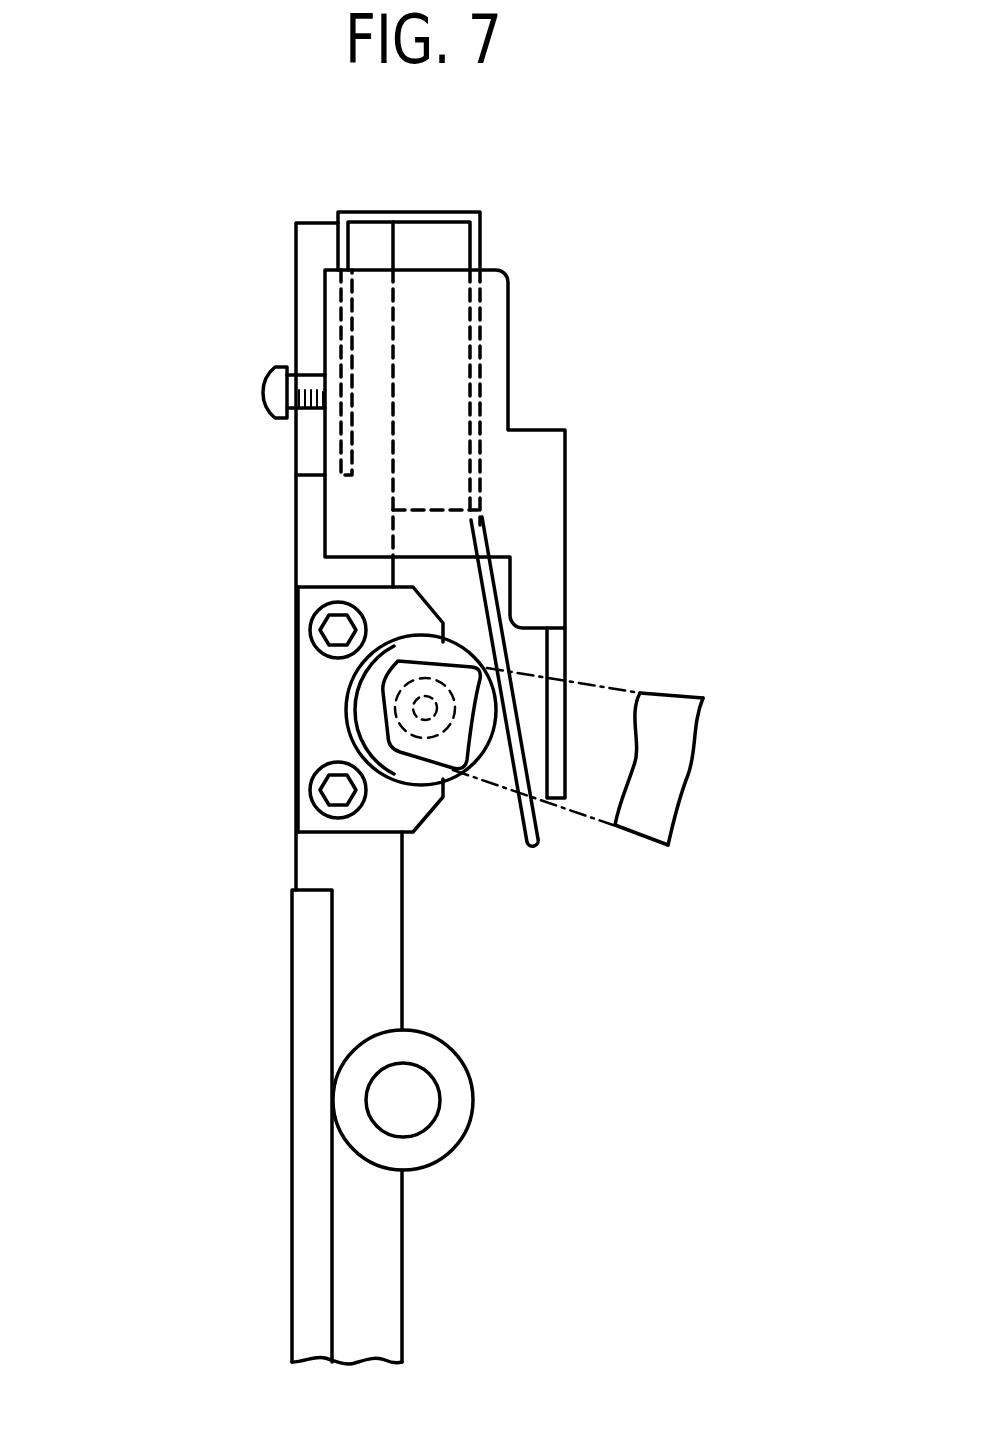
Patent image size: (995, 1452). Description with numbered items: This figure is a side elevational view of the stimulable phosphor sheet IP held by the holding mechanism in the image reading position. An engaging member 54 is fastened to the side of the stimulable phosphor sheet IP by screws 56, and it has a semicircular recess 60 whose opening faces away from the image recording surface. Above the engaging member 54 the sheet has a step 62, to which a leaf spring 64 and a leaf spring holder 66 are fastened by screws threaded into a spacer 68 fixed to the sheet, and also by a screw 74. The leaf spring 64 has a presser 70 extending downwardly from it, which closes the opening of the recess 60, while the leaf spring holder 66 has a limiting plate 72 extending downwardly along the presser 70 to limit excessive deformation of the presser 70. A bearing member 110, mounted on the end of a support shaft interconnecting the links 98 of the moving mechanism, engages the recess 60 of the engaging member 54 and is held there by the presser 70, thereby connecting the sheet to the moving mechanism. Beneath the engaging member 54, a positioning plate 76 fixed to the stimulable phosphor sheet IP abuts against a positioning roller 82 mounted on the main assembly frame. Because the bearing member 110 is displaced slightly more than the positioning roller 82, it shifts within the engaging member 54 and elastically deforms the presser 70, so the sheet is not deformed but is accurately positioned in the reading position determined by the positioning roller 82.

The steps 62 is at (318, 250).
The leaf springs 64 is at (478, 228).
The leaf spring holders 66 is at (497, 337).
The spacers 68 is at (440, 303).
The limiting plates 72 is at (560, 654).
The screws 74 is at (262, 398).
The engaging members 54 is at (326, 716).
The semicircular recesses 60 is at (335, 703).
The bearing members 110 is at (347, 733).
The screws 56 is at (333, 790).
The pressers 70 is at (539, 818).
The links 98 is at (655, 722).
The positioning plates 76 is at (297, 990).
The stimulable phosphor sheet IP is at (385, 980).
The positioning rollers 82 is at (460, 1093).